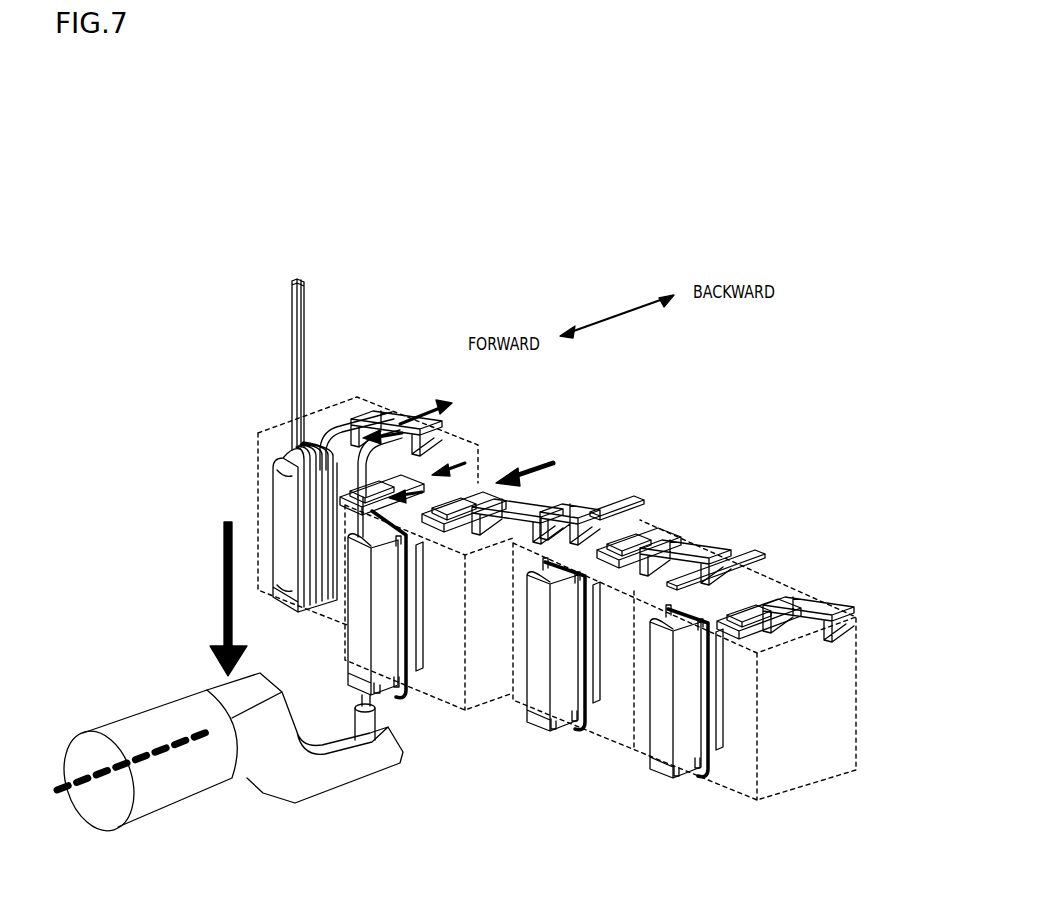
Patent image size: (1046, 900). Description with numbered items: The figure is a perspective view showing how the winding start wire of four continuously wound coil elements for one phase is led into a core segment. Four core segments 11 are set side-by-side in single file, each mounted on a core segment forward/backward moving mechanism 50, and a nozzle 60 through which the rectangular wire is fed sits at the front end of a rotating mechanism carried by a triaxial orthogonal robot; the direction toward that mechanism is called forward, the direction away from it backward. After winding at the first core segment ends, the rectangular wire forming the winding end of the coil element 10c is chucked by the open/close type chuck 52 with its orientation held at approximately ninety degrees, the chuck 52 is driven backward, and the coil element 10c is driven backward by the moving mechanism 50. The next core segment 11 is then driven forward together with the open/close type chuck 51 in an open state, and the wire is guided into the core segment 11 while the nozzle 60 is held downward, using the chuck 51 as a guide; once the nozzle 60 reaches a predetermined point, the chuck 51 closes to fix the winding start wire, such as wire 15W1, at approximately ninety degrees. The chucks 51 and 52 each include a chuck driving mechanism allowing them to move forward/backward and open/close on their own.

The electrode plate 15W1 is at (291, 279).
The coil element 10c is at (282, 498).
The core segment 11 is at (353, 632).
The core segment forward/backward moving mechanism 50 is at (364, 408).
The open/close type chuck 51 is at (422, 477).
The open/close type chuck 52 is at (380, 413).
The nozzle 60 is at (145, 723).